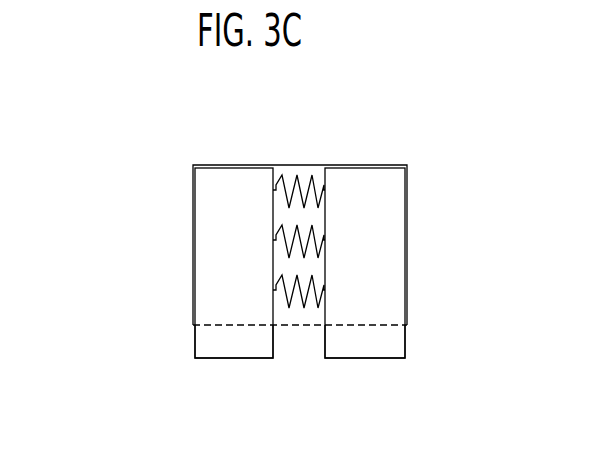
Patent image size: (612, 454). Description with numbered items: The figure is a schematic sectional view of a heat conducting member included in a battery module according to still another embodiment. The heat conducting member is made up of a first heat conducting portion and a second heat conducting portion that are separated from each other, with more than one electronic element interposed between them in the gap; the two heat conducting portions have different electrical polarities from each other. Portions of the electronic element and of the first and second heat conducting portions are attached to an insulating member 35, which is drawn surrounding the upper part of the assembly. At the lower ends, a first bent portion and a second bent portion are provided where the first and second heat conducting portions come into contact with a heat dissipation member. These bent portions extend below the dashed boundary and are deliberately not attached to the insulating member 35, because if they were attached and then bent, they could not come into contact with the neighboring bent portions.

The insulating member 35 is at (405, 165).